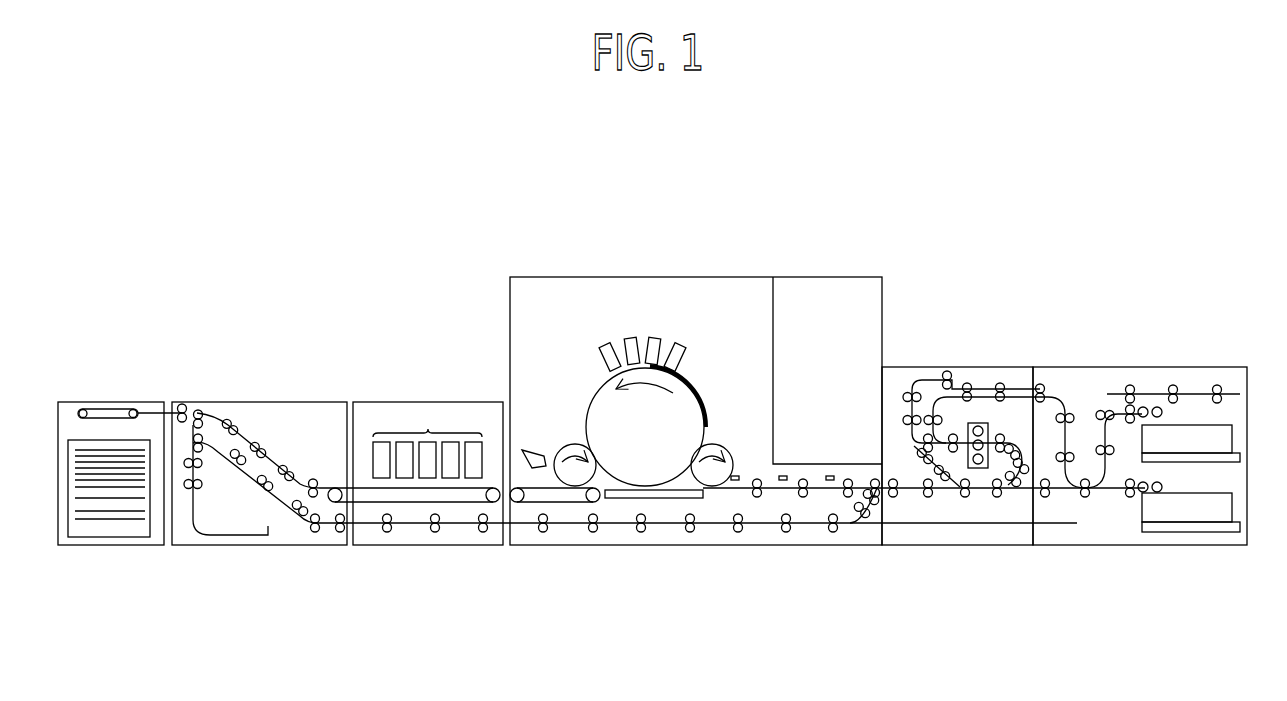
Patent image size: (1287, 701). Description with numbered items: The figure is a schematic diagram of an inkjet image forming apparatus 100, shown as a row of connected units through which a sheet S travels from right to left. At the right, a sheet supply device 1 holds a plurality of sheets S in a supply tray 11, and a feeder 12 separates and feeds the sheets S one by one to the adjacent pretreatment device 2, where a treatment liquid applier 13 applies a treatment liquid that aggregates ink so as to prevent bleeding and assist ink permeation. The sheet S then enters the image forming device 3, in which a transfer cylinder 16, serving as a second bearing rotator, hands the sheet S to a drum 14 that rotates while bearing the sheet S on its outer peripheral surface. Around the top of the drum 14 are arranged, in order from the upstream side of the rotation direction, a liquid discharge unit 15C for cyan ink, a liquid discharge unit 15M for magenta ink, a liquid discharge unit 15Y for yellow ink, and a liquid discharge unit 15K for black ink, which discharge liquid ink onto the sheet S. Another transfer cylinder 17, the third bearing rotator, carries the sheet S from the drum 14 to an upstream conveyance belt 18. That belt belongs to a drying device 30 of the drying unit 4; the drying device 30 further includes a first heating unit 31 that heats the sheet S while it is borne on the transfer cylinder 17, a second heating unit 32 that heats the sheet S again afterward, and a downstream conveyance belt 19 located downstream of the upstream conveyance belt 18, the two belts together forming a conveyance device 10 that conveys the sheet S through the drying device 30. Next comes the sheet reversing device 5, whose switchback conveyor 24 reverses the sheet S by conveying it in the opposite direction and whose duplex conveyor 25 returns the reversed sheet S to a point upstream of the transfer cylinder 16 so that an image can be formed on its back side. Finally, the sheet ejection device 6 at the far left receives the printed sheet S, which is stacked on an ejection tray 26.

The inkjet image forming apparatus 100 is at (893, 181).
The sheet supply device 1 is at (1198, 365).
The pretreatment device 2 is at (1009, 365).
The image forming device 3 is at (733, 275).
The drying unit 4 is at (387, 400).
The sheet reversing device 5 is at (287, 400).
The sheet ejection device 6 is at (97, 400).
The conveyance device 10 is at (463, 598).
The supply tray 11 is at (1183, 463).
The feeder 12 is at (1147, 391).
The treatment liquid applier 13 is at (976, 422).
The drum 14 is at (604, 393).
The liquid discharge unit for black ink 15K is at (606, 342).
The liquid discharge unit for yellow ink 15Y is at (631, 337).
The liquid discharge unit for magenta ink 15M is at (655, 337).
The liquid discharge unit for cyan ink 15C is at (679, 343).
The transfer cylinder 16 is at (724, 464).
The transfer cylinder 17 is at (569, 444).
The upstream conveyance belt 18 is at (568, 503).
The downstream conveyance belt 19 is at (455, 503).
The switchback conveyor 24 is at (200, 497).
The duplex conveyor 25 is at (665, 530).
The ejection tray 26 is at (110, 538).
The drying device 30 is at (467, 408).
The first heating unit 31 is at (537, 448).
The second heating unit 32 is at (427, 440).
The sheet S is at (699, 387).